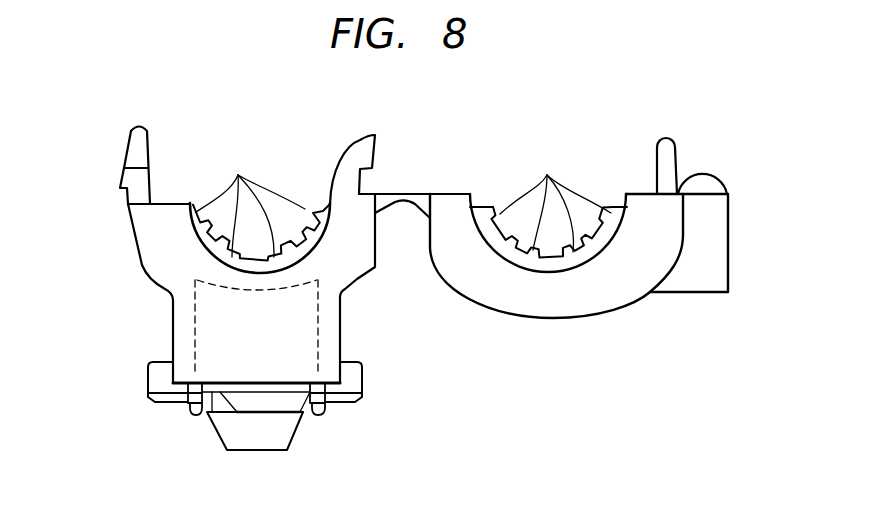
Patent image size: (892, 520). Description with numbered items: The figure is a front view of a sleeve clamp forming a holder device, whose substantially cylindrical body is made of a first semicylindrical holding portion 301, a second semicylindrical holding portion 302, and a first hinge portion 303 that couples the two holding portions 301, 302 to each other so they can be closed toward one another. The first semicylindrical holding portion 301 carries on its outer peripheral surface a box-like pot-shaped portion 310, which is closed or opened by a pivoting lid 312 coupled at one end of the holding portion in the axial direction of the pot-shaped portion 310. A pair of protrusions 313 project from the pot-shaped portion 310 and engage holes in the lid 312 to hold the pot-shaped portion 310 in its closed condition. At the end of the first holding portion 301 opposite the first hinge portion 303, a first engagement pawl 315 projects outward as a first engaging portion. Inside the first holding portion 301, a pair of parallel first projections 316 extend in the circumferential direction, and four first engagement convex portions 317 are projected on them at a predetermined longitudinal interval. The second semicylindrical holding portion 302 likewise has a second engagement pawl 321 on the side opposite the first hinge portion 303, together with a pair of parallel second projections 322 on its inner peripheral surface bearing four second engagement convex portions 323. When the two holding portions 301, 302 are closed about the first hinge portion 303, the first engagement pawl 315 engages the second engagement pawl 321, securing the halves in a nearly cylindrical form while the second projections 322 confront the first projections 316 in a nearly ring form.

The first semicylindrical holding portion 301 is at (344, 280).
The second semicylindrical holding portion 302 is at (579, 302).
The first hinge portion 303 is at (402, 193).
The pot-shaped portion 310 is at (176, 318).
The lid 312 is at (356, 380).
The protrusions 313 is at (186, 416).
The first engagement pawl 315 is at (131, 139).
The first projections 316 is at (183, 223).
The first engagement convex portions 317 is at (250, 198).
The second engagement pawl 321 is at (703, 172).
The second projections 322 is at (617, 270).
The second engagement convex portions 323 is at (555, 196).